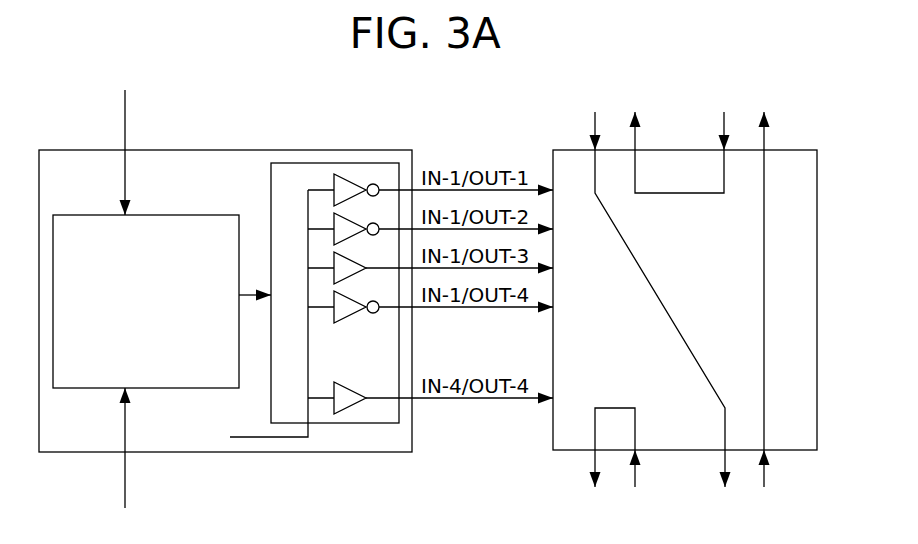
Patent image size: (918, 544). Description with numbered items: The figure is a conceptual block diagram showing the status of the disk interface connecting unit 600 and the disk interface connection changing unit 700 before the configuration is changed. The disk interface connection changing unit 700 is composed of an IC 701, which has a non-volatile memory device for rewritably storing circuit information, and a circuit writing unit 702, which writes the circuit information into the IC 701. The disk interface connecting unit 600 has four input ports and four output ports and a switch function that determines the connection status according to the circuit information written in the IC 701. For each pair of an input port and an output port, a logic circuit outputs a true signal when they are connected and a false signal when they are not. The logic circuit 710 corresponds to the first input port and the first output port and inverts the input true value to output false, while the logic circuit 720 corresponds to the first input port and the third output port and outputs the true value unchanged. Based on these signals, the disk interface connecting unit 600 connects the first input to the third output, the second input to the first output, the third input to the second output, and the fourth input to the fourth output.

The disk interface connecting unit 600 is at (553, 425).
The disk interface connection changing unit 700 is at (215, 150).
The IC 701 is at (275, 302).
The circuit writing unit 702 is at (183, 214).
The logic circuit 710 is at (337, 175).
The logic circuit 720 is at (340, 278).